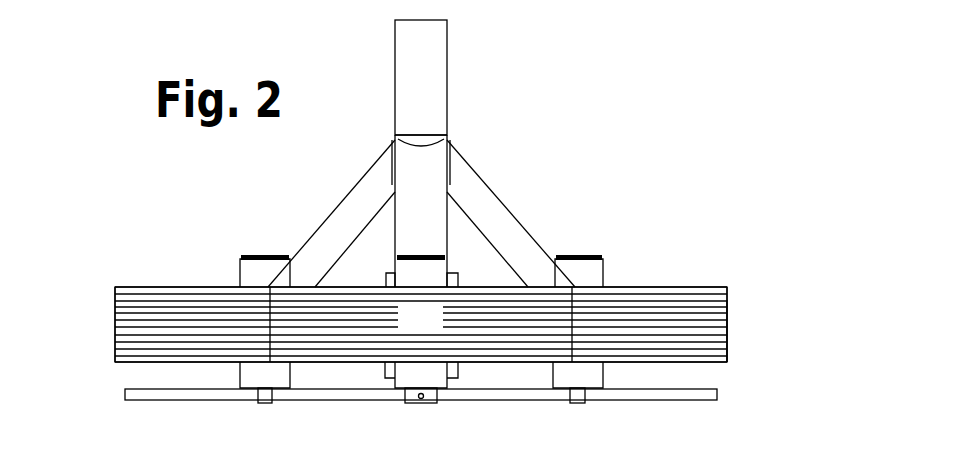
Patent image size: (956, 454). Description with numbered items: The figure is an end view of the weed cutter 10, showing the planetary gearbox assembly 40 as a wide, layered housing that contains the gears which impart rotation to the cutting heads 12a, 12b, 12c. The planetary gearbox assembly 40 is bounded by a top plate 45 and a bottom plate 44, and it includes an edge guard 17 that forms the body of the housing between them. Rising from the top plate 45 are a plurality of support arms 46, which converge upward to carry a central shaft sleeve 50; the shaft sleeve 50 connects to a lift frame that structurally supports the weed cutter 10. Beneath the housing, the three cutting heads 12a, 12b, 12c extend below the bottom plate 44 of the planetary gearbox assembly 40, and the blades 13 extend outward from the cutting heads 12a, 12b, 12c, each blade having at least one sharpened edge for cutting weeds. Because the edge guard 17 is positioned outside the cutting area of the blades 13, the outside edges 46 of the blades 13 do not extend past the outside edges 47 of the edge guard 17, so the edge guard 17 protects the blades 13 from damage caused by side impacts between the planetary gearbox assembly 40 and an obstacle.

The weed cutter 10 is at (603, 66).
The shaft sleeve 50 is at (438, 90).
The edge guard 17 is at (438, 335).
The top plate 45 is at (197, 287).
The planetary gearbox assembly 40 is at (727, 288).
The outside edges of the edge guard 47 is at (115, 333).
The bottom plate 44 is at (700, 364).
The support arms 46 is at (438, 214).
The blades 13 is at (177, 396).
The cutting head 12a is at (577, 403).
The cutting head 12b is at (425, 403).
The cutting head 12c is at (262, 403).